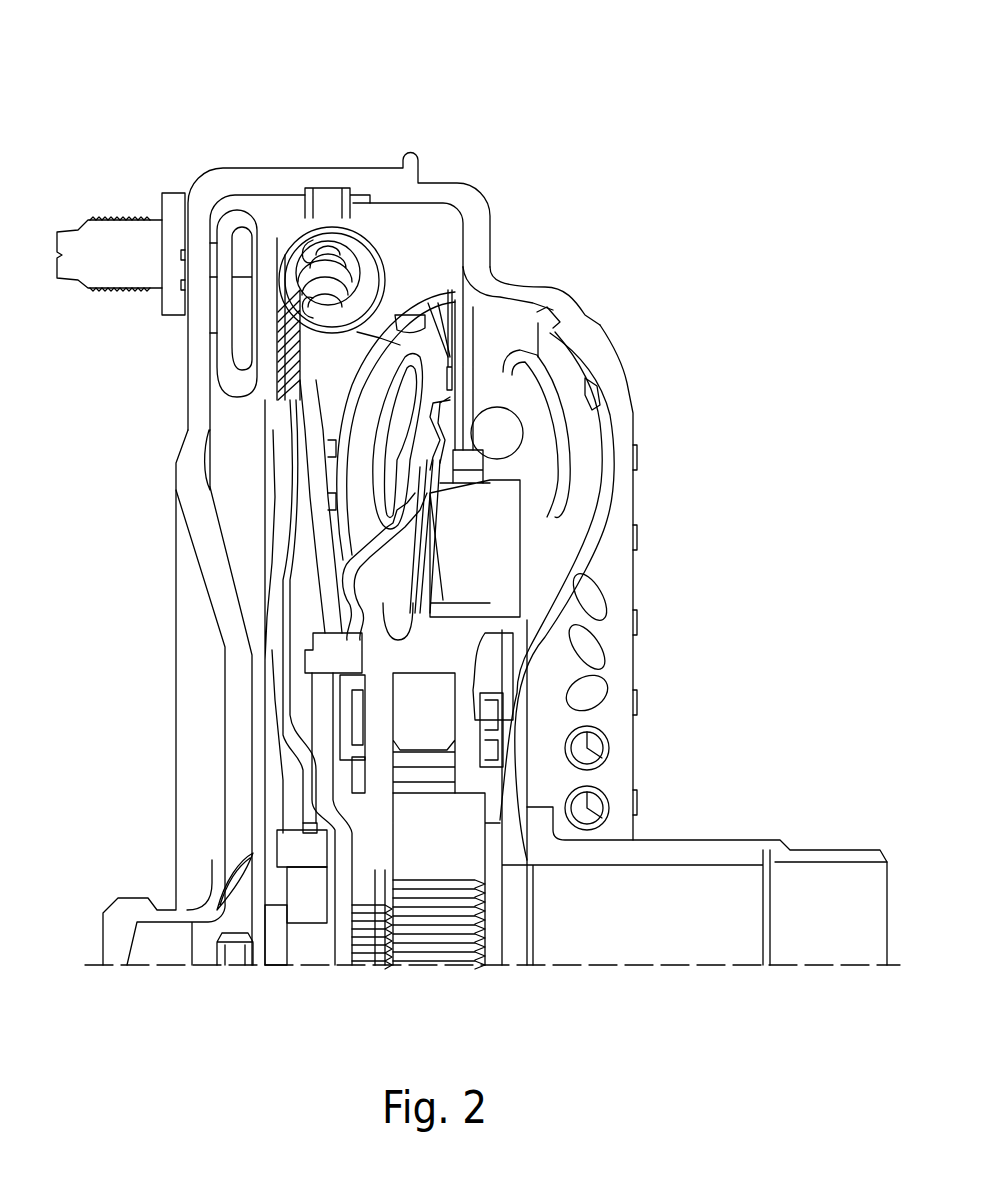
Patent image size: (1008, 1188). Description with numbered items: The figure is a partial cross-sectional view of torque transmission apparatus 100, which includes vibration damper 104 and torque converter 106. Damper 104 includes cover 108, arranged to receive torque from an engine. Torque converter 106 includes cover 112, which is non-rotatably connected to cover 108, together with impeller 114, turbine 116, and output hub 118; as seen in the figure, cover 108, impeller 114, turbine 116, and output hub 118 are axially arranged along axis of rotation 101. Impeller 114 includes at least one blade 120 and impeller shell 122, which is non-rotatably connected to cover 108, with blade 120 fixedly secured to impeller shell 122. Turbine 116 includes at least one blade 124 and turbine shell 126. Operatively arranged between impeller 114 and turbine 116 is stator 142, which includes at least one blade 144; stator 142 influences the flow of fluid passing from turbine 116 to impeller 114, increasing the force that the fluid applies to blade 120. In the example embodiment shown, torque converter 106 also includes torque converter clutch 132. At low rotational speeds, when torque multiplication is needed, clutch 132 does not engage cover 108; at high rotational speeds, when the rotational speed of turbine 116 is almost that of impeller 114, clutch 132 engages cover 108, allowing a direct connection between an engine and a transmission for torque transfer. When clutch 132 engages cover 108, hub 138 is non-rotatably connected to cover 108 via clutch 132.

The torque transmission apparatus 100 is at (198, 90).
The axis of rotation 101 is at (616, 972).
The vibration damper 104 is at (326, 208).
The torque converter 106 is at (602, 318).
The cover 108 is at (182, 173).
The cover 112 is at (492, 210).
The impeller 114 is at (606, 393).
The turbine 116 is at (410, 300).
The output hub 118 is at (364, 892).
The blade 120 is at (633, 570).
The impeller shell 122 is at (633, 480).
The blade 124 is at (380, 425).
The turbine shell 126 is at (338, 465).
The torque converter clutch 132 is at (240, 215).
The hub 138 is at (305, 886).
The stator 142 is at (452, 648).
The blade 144 is at (480, 557).